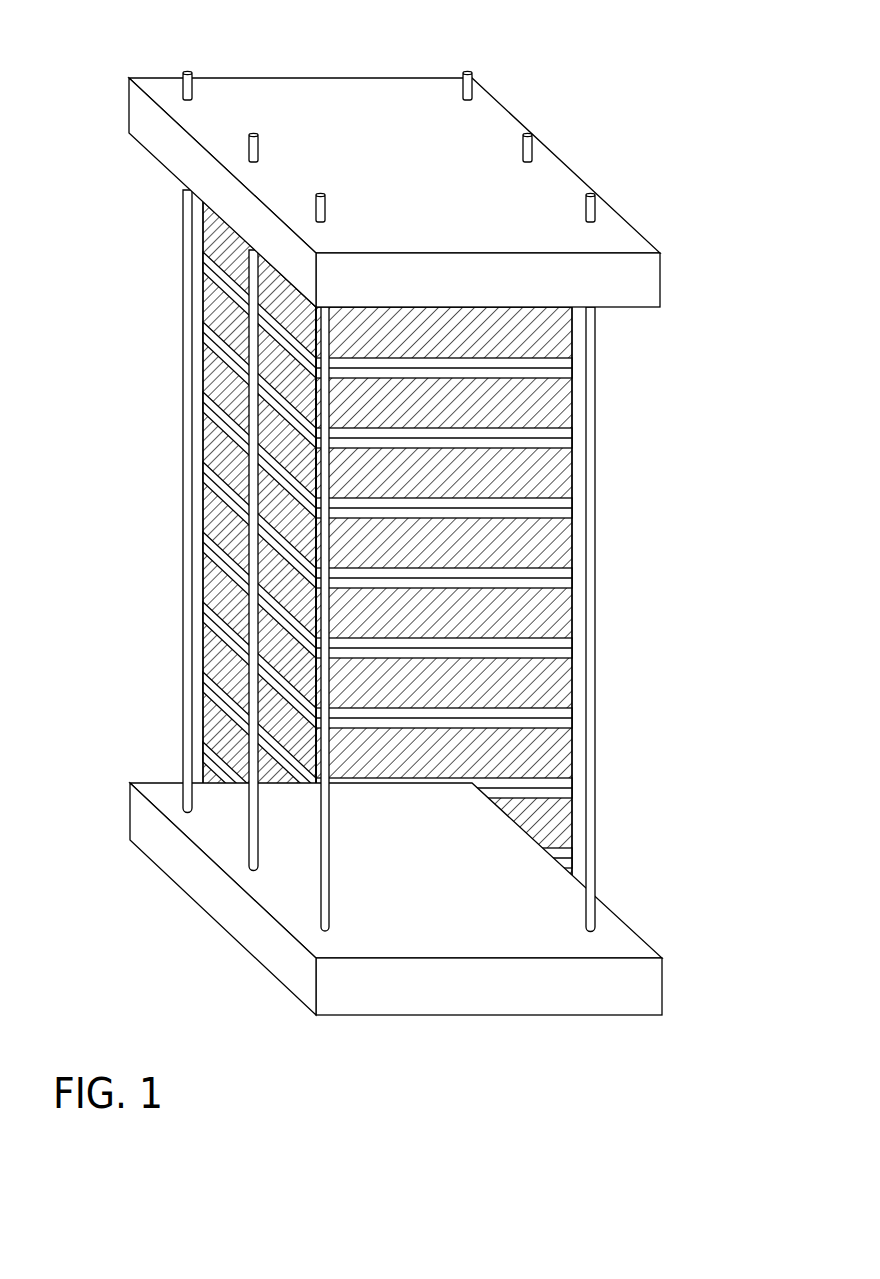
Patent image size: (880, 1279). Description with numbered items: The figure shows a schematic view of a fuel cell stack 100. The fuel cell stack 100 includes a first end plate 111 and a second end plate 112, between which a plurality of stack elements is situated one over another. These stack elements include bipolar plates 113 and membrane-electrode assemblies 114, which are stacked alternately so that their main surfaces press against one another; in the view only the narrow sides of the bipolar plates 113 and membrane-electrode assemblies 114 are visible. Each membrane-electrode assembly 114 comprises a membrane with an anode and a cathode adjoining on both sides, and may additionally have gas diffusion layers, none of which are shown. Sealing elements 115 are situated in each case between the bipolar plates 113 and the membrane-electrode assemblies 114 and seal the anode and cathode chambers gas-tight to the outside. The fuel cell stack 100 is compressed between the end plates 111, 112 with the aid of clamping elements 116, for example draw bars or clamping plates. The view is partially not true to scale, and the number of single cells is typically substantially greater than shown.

The fuel cell stack 100 is at (600, 94).
The first end plate 111 is at (197, 875).
The second end plate 112 is at (326, 97).
The bipolar plate 113 is at (215, 495).
The membrane-electrode assembly 114 is at (220, 543).
The sealing element 115 is at (213, 532).
The clamping element 116 is at (187, 290).